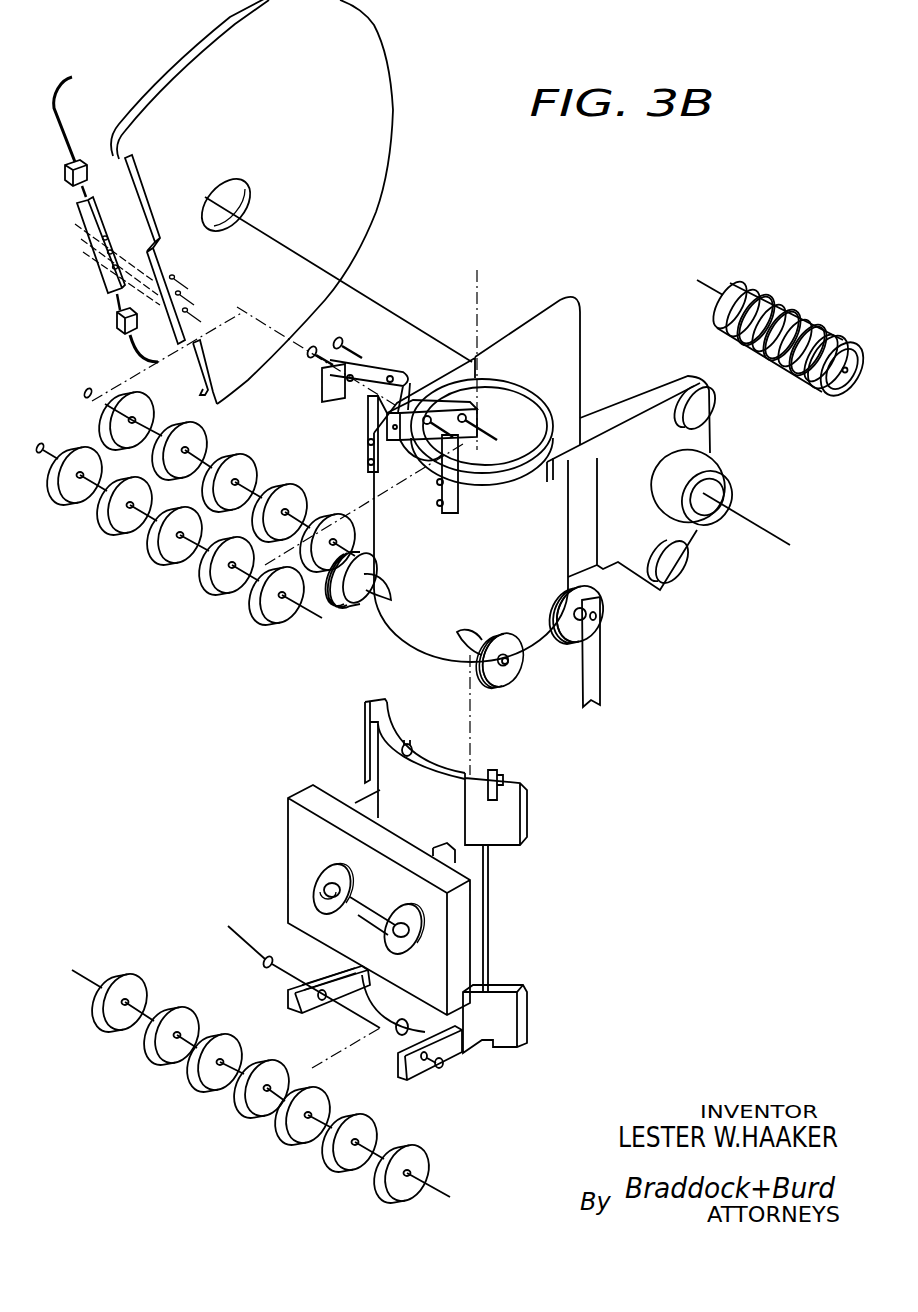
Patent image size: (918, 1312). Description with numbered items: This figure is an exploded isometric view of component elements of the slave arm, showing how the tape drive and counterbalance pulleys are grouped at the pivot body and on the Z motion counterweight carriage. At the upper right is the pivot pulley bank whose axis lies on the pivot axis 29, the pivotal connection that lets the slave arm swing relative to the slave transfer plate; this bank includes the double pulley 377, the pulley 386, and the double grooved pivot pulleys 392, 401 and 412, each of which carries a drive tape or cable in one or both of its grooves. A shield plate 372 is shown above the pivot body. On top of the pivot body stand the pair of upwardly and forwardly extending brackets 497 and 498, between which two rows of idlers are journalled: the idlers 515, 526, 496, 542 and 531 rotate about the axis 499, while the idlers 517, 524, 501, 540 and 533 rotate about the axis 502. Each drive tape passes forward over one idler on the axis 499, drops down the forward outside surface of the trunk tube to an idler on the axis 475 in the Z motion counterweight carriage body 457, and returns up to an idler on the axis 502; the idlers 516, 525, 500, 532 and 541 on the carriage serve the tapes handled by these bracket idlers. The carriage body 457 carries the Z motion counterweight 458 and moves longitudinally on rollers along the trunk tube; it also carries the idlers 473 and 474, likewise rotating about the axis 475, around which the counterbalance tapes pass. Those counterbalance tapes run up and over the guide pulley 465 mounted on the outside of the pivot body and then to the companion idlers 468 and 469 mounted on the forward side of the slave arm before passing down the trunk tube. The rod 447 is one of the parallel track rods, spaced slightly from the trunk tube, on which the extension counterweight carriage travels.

The shield plate 372 is at (382, 163).
The double pivot pulley 392 is at (746, 278).
The double pivot pulley 401 is at (779, 293).
The pulley 386 is at (799, 312).
The double grooved pivot pulley 412 is at (817, 328).
The double pulley 377 is at (821, 391).
The pivot axis 29 is at (846, 374).
The bracket 497 is at (435, 400).
The axis 502 is at (351, 352).
The bracket 498 is at (380, 363).
The axis 499 is at (323, 361).
The idler 515 is at (160, 397).
The idler 526 is at (200, 427).
The idler 496 is at (247, 453).
The idler 542 is at (283, 477).
The idler 531 is at (332, 503).
The idler 517 is at (67, 500).
The idler 524 is at (118, 530).
The idler 501 is at (168, 560).
The idler 540 is at (220, 587).
The idler 533 is at (268, 622).
The idler 469 is at (350, 602).
The guide pulley 465 is at (605, 607).
The rod 447 is at (601, 680).
The idler 468 is at (500, 687).
The Z motion counterweight 458 is at (290, 852).
The Z motion counterweight carriage body 457 is at (488, 888).
The idler 474 is at (122, 973).
The idler 516 is at (177, 1004).
The idler 525 is at (198, 1082).
The idler 500 is at (243, 1111).
The idler 541 is at (292, 1134).
The idler 532 is at (348, 1111).
The idler 473 is at (423, 1155).
The axis 475 is at (457, 1073).